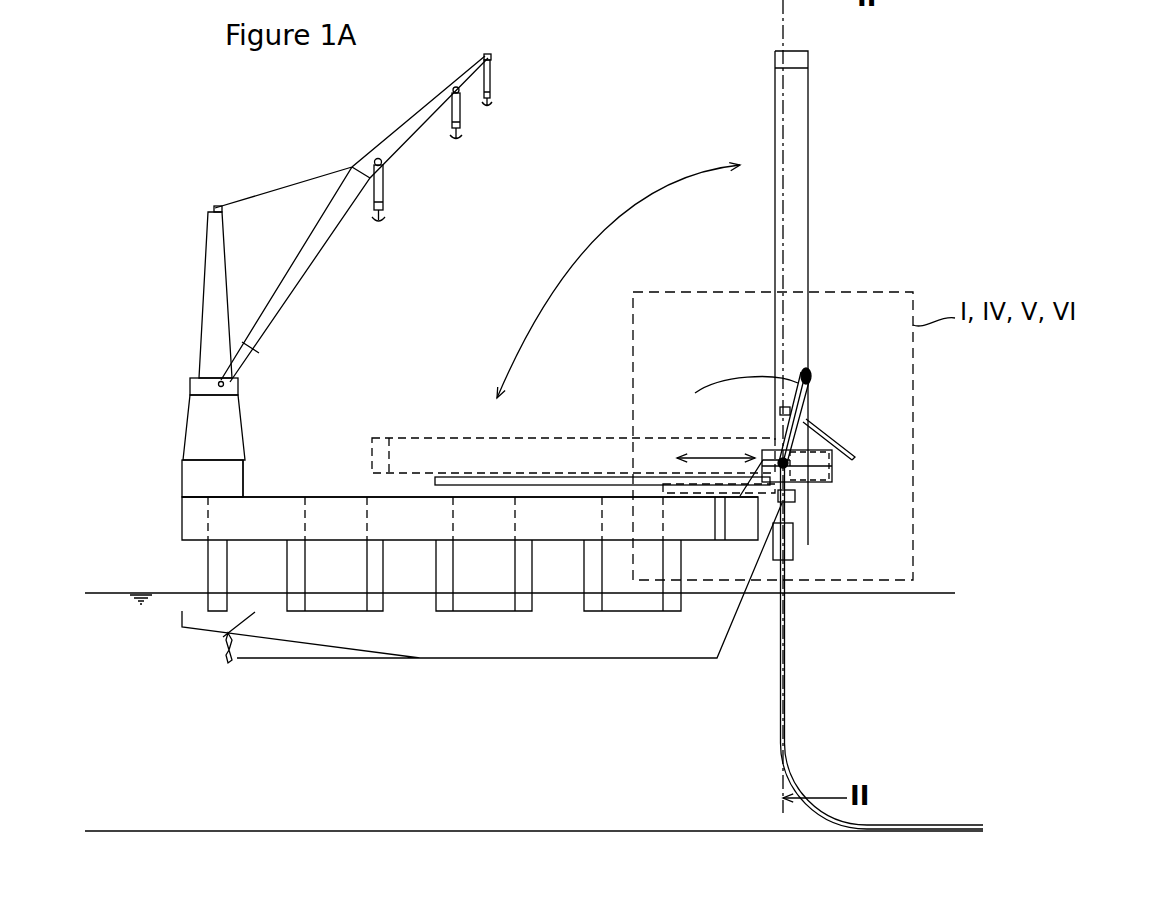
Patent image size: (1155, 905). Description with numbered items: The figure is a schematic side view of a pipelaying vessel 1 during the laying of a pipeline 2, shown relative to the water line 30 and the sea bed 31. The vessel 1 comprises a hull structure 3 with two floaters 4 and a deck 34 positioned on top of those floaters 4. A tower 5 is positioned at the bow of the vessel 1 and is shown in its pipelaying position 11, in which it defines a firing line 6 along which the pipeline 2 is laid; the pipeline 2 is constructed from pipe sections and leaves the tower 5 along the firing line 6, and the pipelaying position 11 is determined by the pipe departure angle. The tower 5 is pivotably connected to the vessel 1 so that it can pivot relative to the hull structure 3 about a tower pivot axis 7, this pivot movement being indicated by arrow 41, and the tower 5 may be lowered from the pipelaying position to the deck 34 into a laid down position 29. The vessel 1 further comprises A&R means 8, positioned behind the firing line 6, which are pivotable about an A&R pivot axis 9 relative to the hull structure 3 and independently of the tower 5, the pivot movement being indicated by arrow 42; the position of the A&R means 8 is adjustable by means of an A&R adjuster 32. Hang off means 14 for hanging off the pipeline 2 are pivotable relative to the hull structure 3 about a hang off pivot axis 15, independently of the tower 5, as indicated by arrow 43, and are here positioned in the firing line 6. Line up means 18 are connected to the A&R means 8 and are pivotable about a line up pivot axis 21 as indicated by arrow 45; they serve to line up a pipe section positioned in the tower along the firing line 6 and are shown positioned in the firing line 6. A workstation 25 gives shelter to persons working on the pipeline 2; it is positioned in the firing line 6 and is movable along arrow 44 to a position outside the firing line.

The vessel 1 is at (600, 104).
The pipeline 2 is at (786, 702).
The hull structure 3 is at (160, 497).
The floaters 4 is at (225, 637).
The tower 5 is at (823, 75).
The firing line 6 is at (787, 16).
The tower pivot axis 7 is at (827, 467).
The A&R means 8 is at (815, 370).
The A&R pivot axis 9 is at (827, 453).
The pipelaying position 11 is at (837, 112).
The hang off means 14 is at (800, 503).
The hang off pivot axis 15 is at (830, 472).
The line up means 18 is at (787, 428).
The line up pivot axis 21 is at (813, 387).
The workstation 25 is at (762, 460).
The laid down position 29 is at (413, 430).
The water line 30 is at (145, 593).
The sea bed 31 is at (150, 831).
The A&R adjuster 32 is at (833, 430).
The deck 34 is at (302, 497).
The arrow 41 is at (618, 280).
The arrow 42 is at (693, 397).
The arrow 43 is at (808, 500).
The arrow 44 is at (700, 455).
The arrow 45 is at (804, 409).